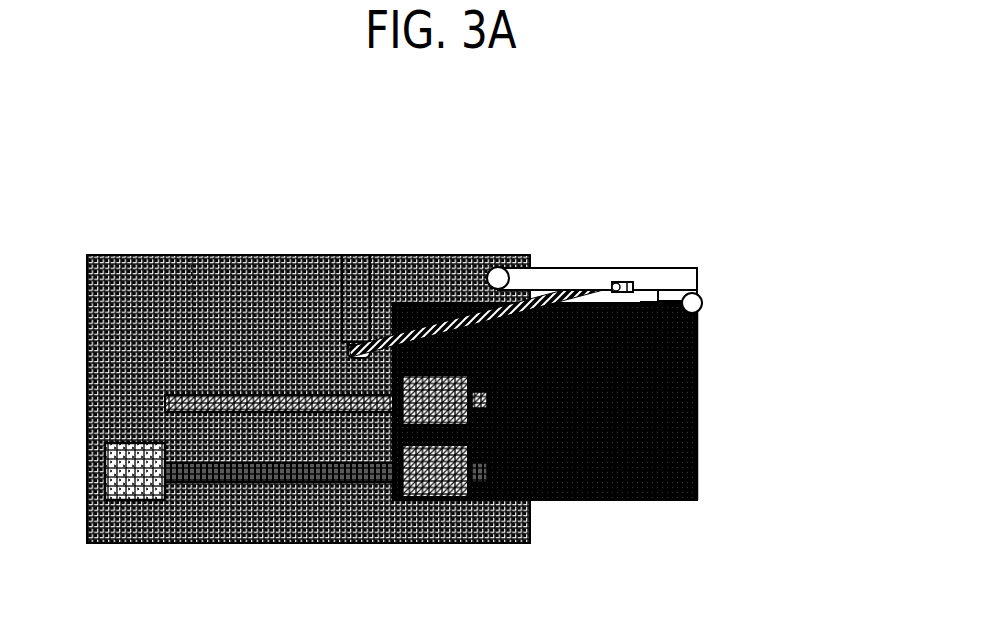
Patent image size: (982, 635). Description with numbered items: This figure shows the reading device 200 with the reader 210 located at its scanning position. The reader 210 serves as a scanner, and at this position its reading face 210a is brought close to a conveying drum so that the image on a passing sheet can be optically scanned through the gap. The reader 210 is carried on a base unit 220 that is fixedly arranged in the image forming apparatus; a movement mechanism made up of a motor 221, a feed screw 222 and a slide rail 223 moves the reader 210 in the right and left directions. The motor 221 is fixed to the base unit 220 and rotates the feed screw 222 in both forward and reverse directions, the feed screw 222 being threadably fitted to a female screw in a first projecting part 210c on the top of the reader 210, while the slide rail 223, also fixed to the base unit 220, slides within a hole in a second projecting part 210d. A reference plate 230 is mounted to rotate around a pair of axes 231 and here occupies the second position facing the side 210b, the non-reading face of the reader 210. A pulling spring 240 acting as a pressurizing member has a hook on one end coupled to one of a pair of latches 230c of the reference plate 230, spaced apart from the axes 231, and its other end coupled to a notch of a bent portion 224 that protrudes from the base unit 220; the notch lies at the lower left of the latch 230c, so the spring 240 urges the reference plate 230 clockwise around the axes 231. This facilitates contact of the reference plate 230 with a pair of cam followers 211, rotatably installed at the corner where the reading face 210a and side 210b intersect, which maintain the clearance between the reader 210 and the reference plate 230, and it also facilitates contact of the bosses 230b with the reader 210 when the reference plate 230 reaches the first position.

The reading device 200 is at (261, 194).
The reader 210 is at (634, 510).
The reading face 210a is at (698, 405).
The side of the reader 210b is at (645, 302).
The first projecting part 210c is at (410, 499).
The second projecting part 210d is at (447, 415).
The cam followers 211 is at (702, 305).
The base unit 220 is at (184, 252).
The motor 221 is at (140, 497).
The feed screw 222 is at (218, 482).
The slide rail 223 is at (303, 397).
The bent portion 224 is at (347, 290).
The reference plate 230 is at (557, 260).
The bosses 230b is at (678, 290).
The latches 230c is at (621, 282).
The axes 231 is at (496, 267).
The pulling spring 240 is at (453, 318).